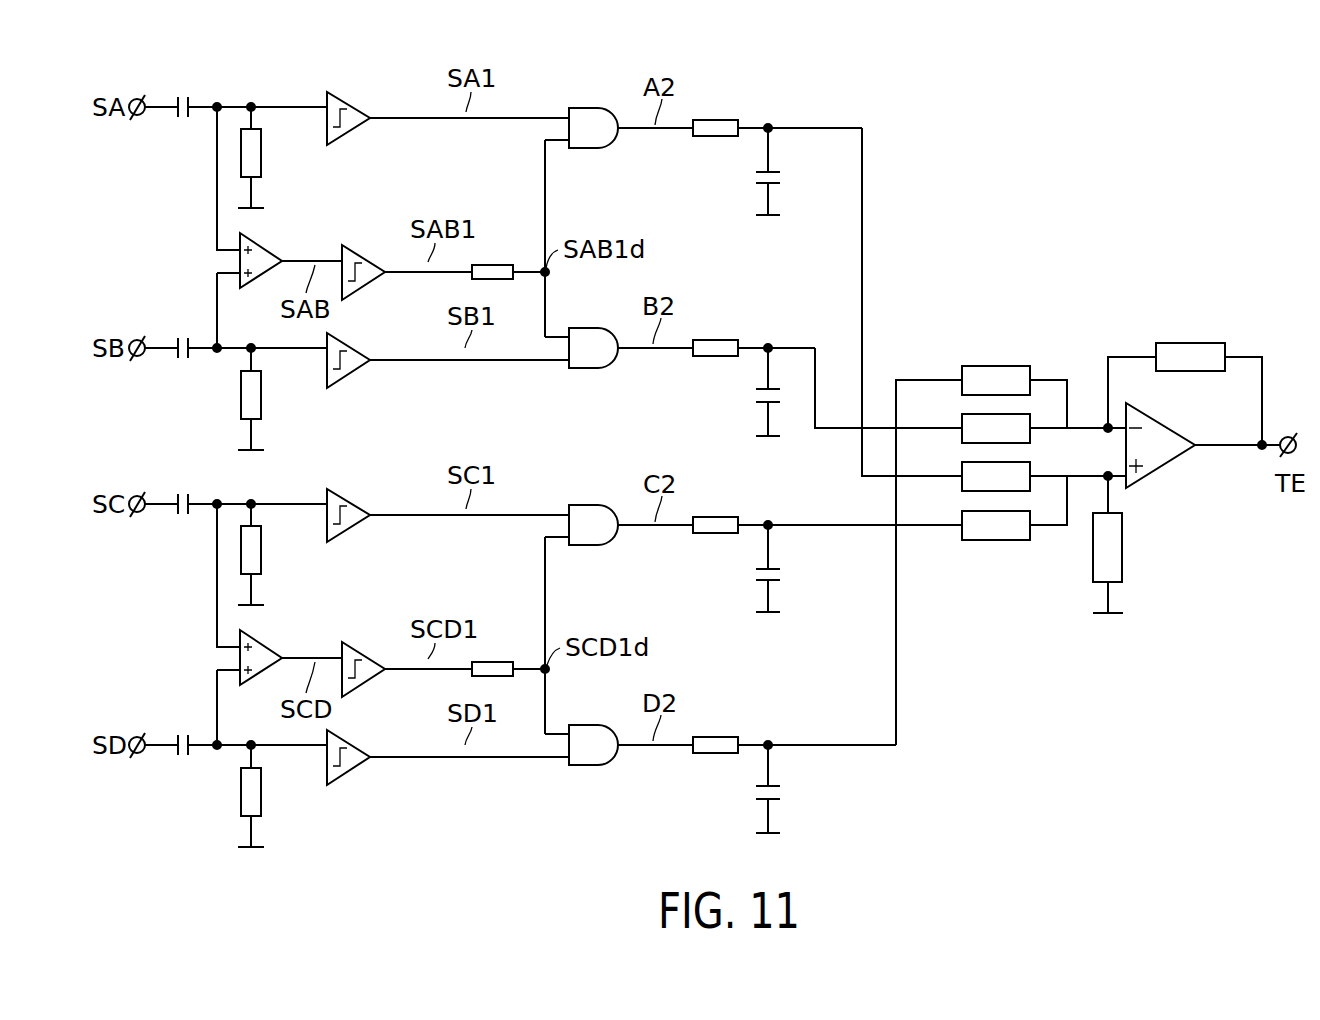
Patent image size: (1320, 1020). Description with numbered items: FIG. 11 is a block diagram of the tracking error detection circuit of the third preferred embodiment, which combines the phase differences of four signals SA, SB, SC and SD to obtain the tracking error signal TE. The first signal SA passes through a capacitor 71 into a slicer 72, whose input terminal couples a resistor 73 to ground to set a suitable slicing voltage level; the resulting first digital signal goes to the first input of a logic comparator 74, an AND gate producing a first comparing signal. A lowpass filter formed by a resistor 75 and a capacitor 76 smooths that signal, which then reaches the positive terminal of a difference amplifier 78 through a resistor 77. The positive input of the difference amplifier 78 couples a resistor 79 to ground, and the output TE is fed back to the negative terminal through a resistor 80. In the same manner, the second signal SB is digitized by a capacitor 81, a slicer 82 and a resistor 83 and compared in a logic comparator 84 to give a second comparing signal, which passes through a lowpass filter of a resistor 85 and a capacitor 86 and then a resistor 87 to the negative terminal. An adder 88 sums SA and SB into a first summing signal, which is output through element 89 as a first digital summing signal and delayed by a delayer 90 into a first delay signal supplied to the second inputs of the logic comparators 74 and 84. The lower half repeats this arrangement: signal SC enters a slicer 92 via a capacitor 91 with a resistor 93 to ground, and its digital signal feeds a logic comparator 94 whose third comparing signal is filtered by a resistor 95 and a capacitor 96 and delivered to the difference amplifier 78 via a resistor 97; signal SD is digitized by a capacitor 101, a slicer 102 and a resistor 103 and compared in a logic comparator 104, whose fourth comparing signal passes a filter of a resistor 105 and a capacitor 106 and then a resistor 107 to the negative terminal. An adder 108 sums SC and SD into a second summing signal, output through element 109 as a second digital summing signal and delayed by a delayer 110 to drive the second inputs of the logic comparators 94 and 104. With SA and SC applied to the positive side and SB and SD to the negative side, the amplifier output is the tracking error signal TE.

The capacitor 71 is at (183, 96).
The slicer 72 is at (350, 102).
The resistor 73 is at (261, 170).
The logic comparator (AND) 74 is at (584, 108).
The resistor 75 is at (714, 120).
The capacitor 76 is at (782, 175).
The resistor 77 is at (962, 470).
The difference amplifier 78 is at (1172, 428).
The resistor 79 is at (1123, 548).
The resistor 80 is at (1188, 343).
The capacitor 81 is at (183, 368).
The slicer 82 is at (353, 338).
The resistor 83 is at (262, 409).
The logic comparator 84 is at (590, 328).
The resistor 85 is at (714, 339).
The capacitor 86 is at (754, 396).
The resistor 87 is at (1032, 436).
The adder 88 is at (266, 240).
The buffer with hysteresis 89 is at (354, 246).
The delayer 90 is at (497, 264).
The capacitor 91 is at (191, 479).
The slicer 92 is at (365, 502).
The resistor 93 is at (278, 554).
The logic comparator (AND) 94 is at (593, 500).
The resistor 95 is at (715, 496).
The capacitor 96 is at (797, 568).
The resistor 97 is at (987, 540).
The capacitor 101 is at (187, 776).
The slicer 102 is at (367, 743).
The resistor 103 is at (285, 796).
The logic comparator 104 is at (595, 721).
The resistor 105 is at (718, 716).
The capacitor 106 is at (731, 789).
The resistor 107 is at (988, 366).
The adder 108 is at (283, 643).
The buffer with hysteresis 109 is at (368, 649).
The delayer 110 is at (500, 643).